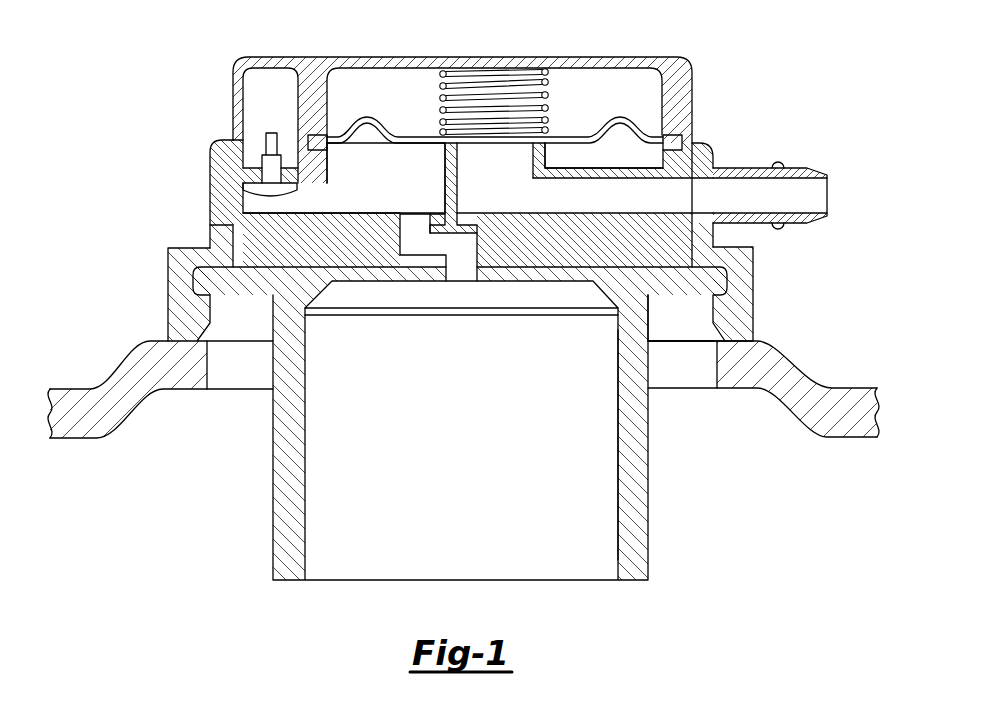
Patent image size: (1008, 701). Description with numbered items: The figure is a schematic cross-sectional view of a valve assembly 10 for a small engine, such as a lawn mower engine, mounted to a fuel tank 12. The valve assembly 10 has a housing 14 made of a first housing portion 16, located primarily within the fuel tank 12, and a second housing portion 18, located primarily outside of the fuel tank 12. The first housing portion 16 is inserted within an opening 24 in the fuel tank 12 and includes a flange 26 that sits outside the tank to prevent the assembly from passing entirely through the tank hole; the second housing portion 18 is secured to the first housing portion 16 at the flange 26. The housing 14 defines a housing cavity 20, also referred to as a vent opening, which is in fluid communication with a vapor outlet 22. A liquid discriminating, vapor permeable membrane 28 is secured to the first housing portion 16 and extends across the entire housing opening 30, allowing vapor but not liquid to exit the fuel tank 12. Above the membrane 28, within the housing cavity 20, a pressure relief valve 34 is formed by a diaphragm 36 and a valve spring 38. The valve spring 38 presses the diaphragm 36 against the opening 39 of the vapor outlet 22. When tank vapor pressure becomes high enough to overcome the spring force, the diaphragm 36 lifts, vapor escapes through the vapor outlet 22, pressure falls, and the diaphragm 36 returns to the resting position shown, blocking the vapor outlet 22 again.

The valve assembly 10 is at (128, 93).
The fuel tank 12 is at (88, 402).
The housing 14 is at (158, 296).
The first housing portion 16 is at (640, 513).
The second housing portion 18 is at (210, 163).
The housing cavity 20 is at (381, 187).
The vapor outlet 22 is at (812, 197).
The opening 24 is at (628, 358).
The flange 26 is at (661, 296).
The membrane 28 is at (466, 316).
The housing opening 30 is at (459, 243).
The pressure relief valve 34 is at (571, 83).
The diaphragm 36 is at (569, 137).
The valve spring 38 is at (498, 85).
The opening of the vapor outlet 39 is at (533, 160).